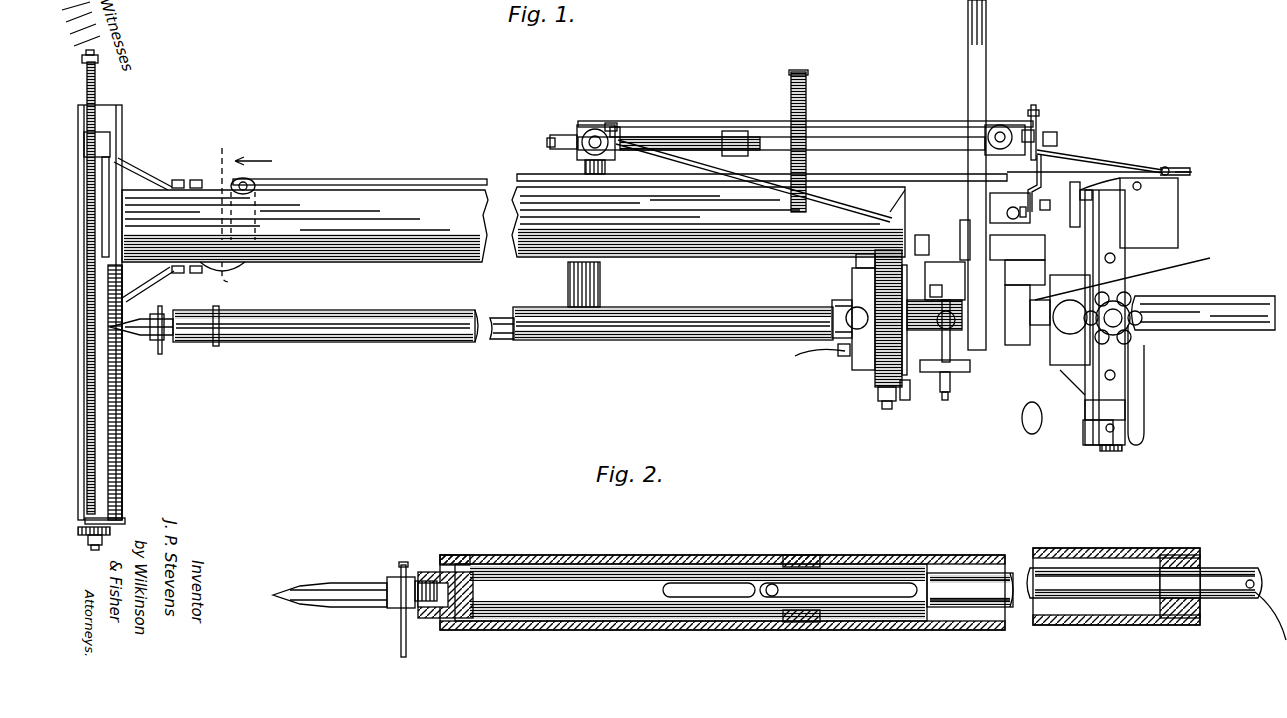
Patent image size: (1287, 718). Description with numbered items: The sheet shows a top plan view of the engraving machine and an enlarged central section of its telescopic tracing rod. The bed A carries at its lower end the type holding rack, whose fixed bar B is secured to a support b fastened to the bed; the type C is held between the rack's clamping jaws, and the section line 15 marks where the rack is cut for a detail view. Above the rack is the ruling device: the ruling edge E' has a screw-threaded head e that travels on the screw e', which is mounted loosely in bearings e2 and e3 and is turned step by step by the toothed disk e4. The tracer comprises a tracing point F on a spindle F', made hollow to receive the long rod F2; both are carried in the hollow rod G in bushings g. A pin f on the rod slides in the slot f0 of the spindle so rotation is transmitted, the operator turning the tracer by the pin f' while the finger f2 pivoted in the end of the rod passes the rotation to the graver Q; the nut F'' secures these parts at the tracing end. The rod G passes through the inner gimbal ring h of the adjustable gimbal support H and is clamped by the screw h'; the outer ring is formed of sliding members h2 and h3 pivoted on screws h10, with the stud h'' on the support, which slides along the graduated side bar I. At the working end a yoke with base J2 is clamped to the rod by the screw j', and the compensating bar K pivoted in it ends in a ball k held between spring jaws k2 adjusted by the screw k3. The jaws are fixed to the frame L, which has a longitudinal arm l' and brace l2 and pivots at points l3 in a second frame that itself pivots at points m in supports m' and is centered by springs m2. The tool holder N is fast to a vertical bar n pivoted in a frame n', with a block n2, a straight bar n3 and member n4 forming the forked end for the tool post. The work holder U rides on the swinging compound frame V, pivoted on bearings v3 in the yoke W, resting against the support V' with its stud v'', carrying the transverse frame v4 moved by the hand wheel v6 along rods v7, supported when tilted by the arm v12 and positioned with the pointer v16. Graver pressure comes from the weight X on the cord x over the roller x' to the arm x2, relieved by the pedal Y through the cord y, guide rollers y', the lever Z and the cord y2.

In FIG. 1, the bed A is at (540, 262).
In FIG. 1, the fixed bar B is at (122, 478).
In FIG. 1, the support b is at (122, 402).
In FIG. 1, the type C is at (118, 428).
In FIG. 1, the bracket E' is at (152, 196).
In FIG. 1, the screw-threaded head e is at (112, 132).
In FIG. 1, the screw e' is at (113, 288).
In FIG. 1, the bearing e2 is at (82, 527).
In FIG. 1, the bearing e3 is at (98, 60).
In FIG. 1, the toothed disk e4 is at (88, 545).
In FIG. 1, the tracing point F is at (141, 307).
In FIG. 2, the tracing point F is at (330, 569).
In FIG. 2, the spindle F' is at (734, 571).
In FIG. 1, the spindle nut F'' is at (175, 341).
In FIG. 2, the spindle nut F'' is at (412, 592).
In FIG. 1, the rod F2 is at (497, 340).
In FIG. 2, the rod F2 is at (1050, 580).
In FIG. 2, the pin f is at (780, 560).
In FIG. 1, the pin f' is at (150, 341).
In FIG. 2, the pin f' is at (384, 617).
In FIG. 2, the slot f0 is at (700, 590).
In FIG. 2, the finger f2 is at (1270, 615).
In FIG. 1, the hollow rod G is at (310, 310).
In FIG. 2, the hollow rod G is at (1000, 630).
In FIG. 2, the bushing g is at (462, 570).
In FIG. 1, the gimbal support H is at (875, 378).
In FIG. 1, the inner gimbal ring h is at (830, 319).
In FIG. 1, the clamping screw h' is at (820, 349).
In FIG. 1, the sliding member h2 is at (842, 356).
In FIG. 1, the sliding member h3 is at (856, 258).
In FIG. 1, the stud h'' is at (873, 415).
In FIG. 1, the pivot screw h10 is at (905, 400).
In FIG. 1, the side bar I is at (690, 307).
In FIG. 1, the base pin J2 is at (965, 372).
In FIG. 1, the screw j' is at (945, 281).
In FIG. 1, the compensating bar K is at (1025, 355).
In FIG. 1, the ball k is at (942, 360).
In FIG. 1, the spring jaws k2 is at (935, 330).
In FIG. 1, the screw k3 is at (930, 240).
In FIG. 1, the frame L is at (853, 159).
In FIG. 1, the longitudinal arm l' is at (760, 122).
In FIG. 1, the brace l2 is at (870, 215).
In FIG. 1, the pivot point l3 is at (618, 128).
In FIG. 1, the pivot point m is at (786, 134).
In FIG. 1, the support m' is at (810, 144).
In FIG. 1, the spring m2 is at (806, 95).
In FIG. 1, the swinging tool holder N is at (1020, 285).
In FIG. 1, the vertical bar n is at (1028, 202).
In FIG. 1, the frame n' is at (1015, 189).
In FIG. 1, the block n2 is at (1035, 258).
In FIG. 1, the bar n3 is at (975, 230).
In FIG. 1, the member n4 is at (1131, 269).
In FIG. 1, the graver Q is at (1031, 423).
In FIG. 1, the compound work holder U is at (1060, 355).
In FIG. 1, the swinging compound frame V is at (1124, 320).
In FIG. 1, the support V' is at (1102, 182).
In FIG. 1, the stud v'' is at (1033, 216).
In FIG. 1, the bearing v3 is at (986, 110).
In FIG. 1, the transverse frame v4 is at (1125, 430).
In FIG. 1, the hand wheel v6 is at (1130, 305).
In FIG. 1, the parallel rod v7 is at (1100, 230).
In FIG. 1, the arm v12 is at (1210, 288).
In FIG. 1, the index or pointer v16 is at (1144, 355).
In FIG. 1, the yoke W is at (1070, 395).
In FIG. 1, the weight X is at (582, 128).
In FIG. 1, the cord x is at (805, 109).
In FIG. 1, the roller x' is at (625, 107).
In FIG. 1, the arm x2 is at (1036, 108).
In FIG. 1, the pedal Y is at (240, 270).
In FIG. 1, the cord or wire y is at (720, 167).
In FIG. 1, the guide roller y' is at (259, 186).
In FIG. 1, the cord y2 is at (1090, 158).
In FIG. 1, the lever Z is at (1170, 168).
In FIG. 1, the section line 15 is at (236, 215).